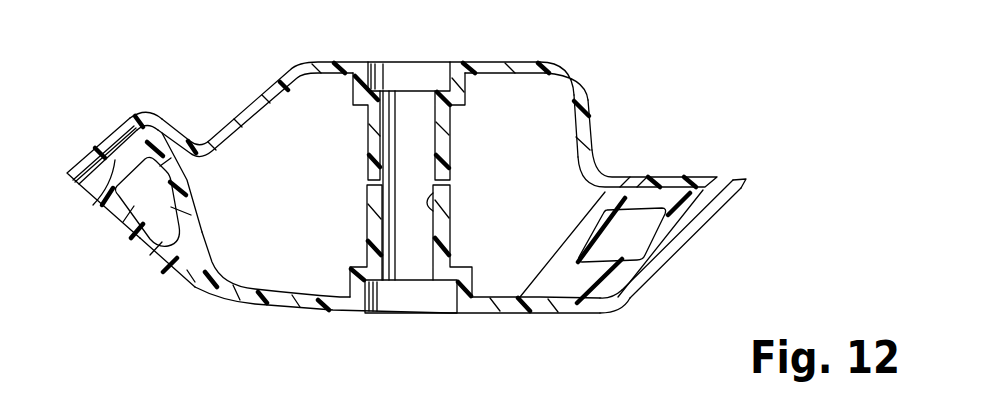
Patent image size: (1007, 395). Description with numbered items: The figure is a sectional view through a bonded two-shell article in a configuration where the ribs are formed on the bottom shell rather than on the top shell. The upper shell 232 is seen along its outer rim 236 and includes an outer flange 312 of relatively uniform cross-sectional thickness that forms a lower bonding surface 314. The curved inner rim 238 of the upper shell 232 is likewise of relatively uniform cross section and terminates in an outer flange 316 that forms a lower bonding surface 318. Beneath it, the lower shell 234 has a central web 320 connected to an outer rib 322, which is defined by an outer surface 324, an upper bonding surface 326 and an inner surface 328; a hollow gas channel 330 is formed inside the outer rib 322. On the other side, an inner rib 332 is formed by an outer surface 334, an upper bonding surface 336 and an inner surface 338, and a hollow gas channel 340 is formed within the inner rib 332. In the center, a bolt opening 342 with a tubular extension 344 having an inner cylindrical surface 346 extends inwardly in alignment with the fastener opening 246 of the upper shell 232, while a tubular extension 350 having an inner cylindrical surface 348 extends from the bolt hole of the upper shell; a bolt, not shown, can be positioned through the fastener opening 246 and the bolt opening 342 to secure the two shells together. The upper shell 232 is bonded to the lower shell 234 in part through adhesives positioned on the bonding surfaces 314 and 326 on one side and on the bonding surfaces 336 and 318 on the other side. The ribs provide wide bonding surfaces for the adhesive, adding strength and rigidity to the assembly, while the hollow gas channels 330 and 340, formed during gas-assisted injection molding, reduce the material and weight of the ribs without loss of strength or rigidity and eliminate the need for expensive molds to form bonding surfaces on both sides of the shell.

The upper shell 232 is at (576, 70).
The lower shell 234 is at (619, 297).
The outer rim 236 is at (589, 113).
The curved inner rim 238 is at (247, 100).
The fastener opening 246 is at (452, 73).
The outer flange 312 is at (686, 178).
The lower bonding surface 314 is at (708, 195).
The outer flange 316 is at (122, 147).
The lower bonding surface 318 is at (99, 199).
The central web 320 is at (246, 311).
The outer rib 322 is at (657, 250).
The outer surface 324 is at (688, 245).
The upper bonding surface 326 is at (625, 190).
The inner surface 328 is at (543, 260).
The hollow gas channel 330 is at (583, 262).
The inner rib 332 is at (143, 233).
The outer surface 334 is at (113, 217).
The upper bonding surface 336 is at (144, 110).
The inner surface 338 is at (191, 182).
The hollow gas channel 340 is at (180, 222).
The bolt opening 342 is at (368, 291).
The tubular extension 344 is at (452, 230).
The inner cylindrical surface 346 is at (440, 185).
The inner cylindrical surface 348 is at (393, 136).
The tubular extension 350 is at (450, 132).